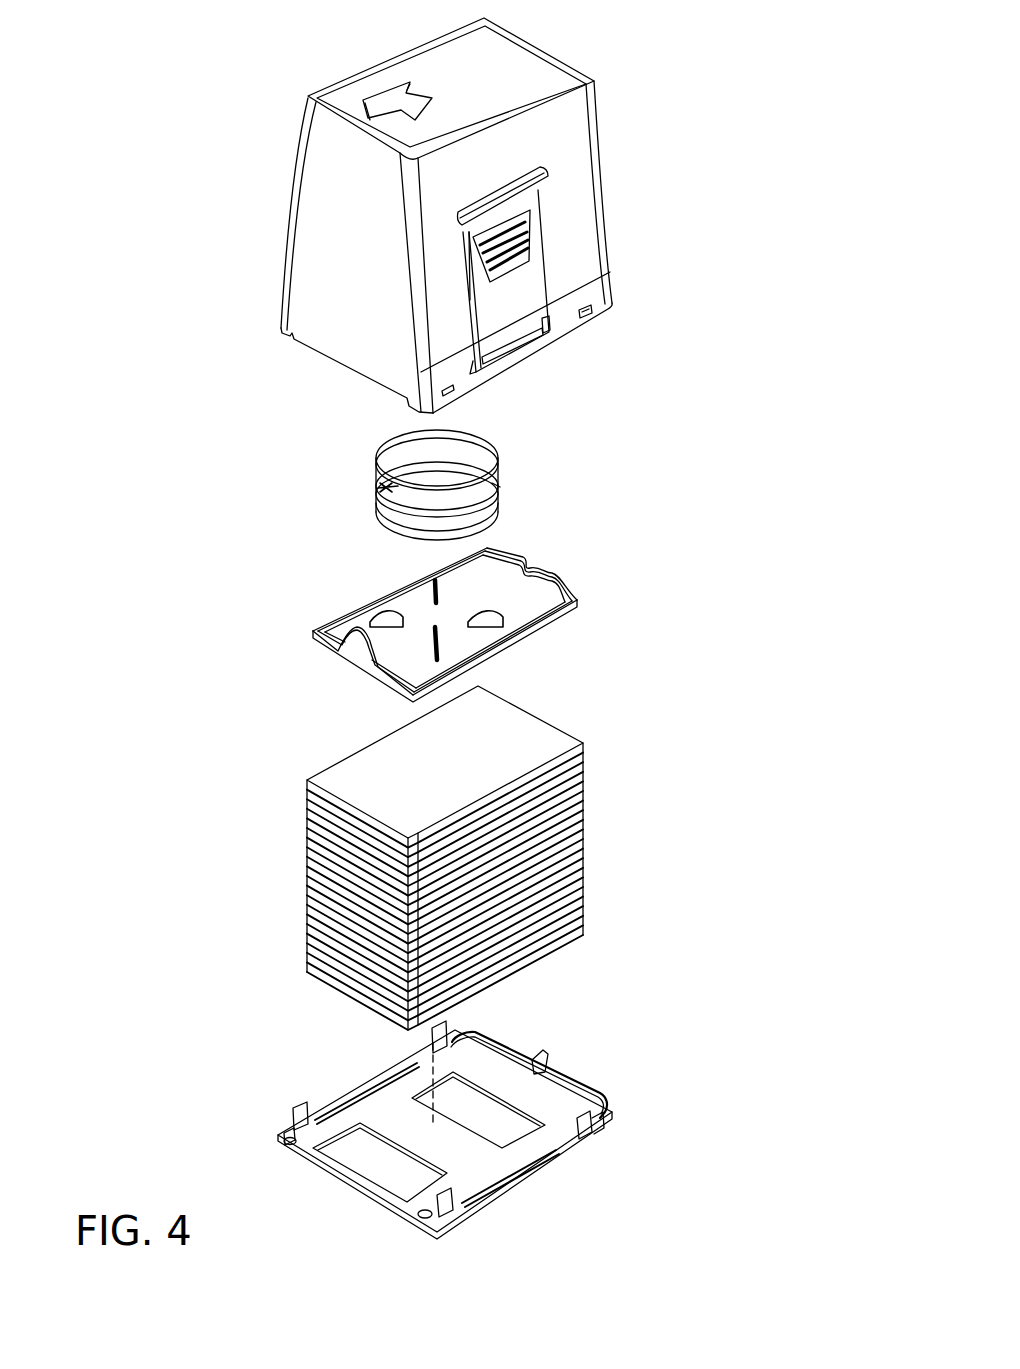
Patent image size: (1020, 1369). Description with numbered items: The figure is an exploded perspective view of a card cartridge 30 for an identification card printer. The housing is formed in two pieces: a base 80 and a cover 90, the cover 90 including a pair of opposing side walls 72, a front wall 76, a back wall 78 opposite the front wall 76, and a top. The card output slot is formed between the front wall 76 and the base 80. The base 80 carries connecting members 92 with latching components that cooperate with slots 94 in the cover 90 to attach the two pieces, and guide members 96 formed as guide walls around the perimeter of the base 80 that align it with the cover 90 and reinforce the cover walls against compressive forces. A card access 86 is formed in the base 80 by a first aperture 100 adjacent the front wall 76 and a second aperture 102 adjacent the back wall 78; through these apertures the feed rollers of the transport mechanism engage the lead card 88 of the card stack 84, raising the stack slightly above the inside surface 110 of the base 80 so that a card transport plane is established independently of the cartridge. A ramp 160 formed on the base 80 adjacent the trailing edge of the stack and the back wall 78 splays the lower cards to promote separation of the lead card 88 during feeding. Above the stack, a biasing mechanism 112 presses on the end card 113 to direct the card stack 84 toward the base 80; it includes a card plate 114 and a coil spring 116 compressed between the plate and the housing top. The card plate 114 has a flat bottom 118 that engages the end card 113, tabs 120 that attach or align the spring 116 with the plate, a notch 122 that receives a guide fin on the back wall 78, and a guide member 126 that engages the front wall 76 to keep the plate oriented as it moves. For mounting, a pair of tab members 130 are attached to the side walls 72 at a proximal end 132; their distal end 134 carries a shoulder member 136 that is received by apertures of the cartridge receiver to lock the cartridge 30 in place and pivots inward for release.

The card cartridge 30 is at (638, 44).
The cover 90 is at (302, 52).
The side walls 72 is at (287, 180).
The front wall 76 is at (303, 297).
The back wall 78 is at (605, 185).
The slots 94 is at (593, 317).
The tab members 130 is at (543, 340).
The proximal end 132 is at (502, 193).
The distal end 134 is at (497, 337).
The shoulder member 136 is at (504, 355).
The biasing mechanism 112 is at (657, 413).
The coil spring 116 is at (493, 488).
The card plate 114 is at (333, 615).
The flat bottom 118 is at (520, 638).
The guide member 126 is at (358, 648).
The notch 122 is at (540, 560).
The tabs 120 is at (558, 595).
The card stack 84 is at (622, 769).
The end card 113 is at (547, 737).
The lead card 88 is at (557, 953).
The base 80 is at (538, 1165).
The first aperture 100 is at (395, 1180).
The second aperture 102 is at (423, 1097).
The guide members 96 is at (523, 1050).
The inside surface 110 is at (482, 1057).
The ramp 160 is at (549, 1060).
The connecting members 92 is at (593, 1090).
The card access 86 is at (313, 1152).